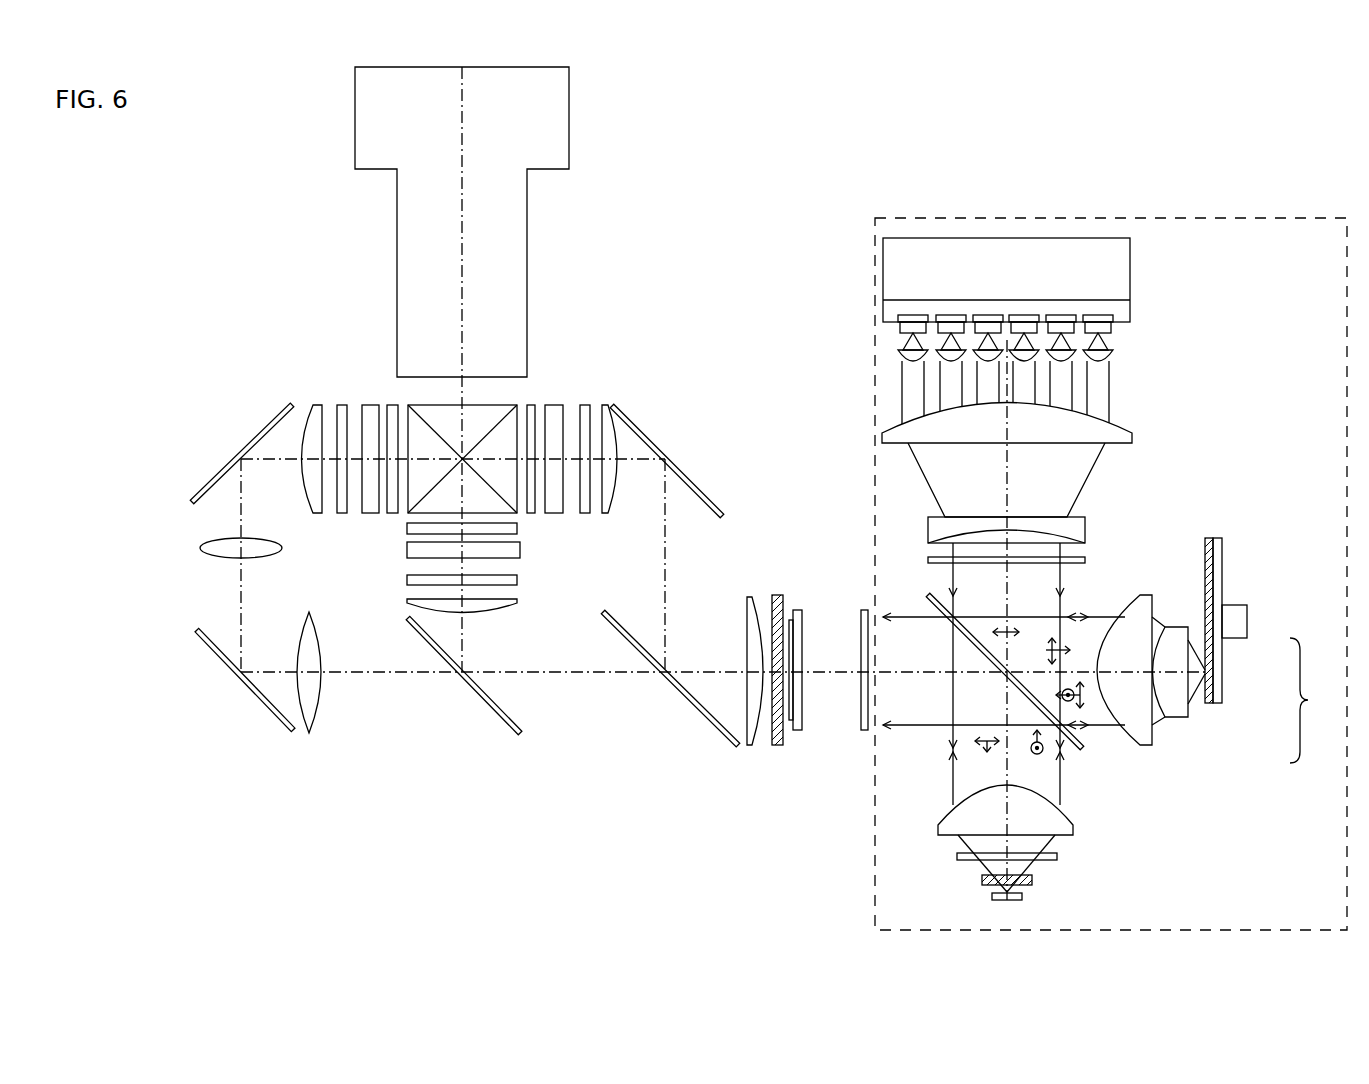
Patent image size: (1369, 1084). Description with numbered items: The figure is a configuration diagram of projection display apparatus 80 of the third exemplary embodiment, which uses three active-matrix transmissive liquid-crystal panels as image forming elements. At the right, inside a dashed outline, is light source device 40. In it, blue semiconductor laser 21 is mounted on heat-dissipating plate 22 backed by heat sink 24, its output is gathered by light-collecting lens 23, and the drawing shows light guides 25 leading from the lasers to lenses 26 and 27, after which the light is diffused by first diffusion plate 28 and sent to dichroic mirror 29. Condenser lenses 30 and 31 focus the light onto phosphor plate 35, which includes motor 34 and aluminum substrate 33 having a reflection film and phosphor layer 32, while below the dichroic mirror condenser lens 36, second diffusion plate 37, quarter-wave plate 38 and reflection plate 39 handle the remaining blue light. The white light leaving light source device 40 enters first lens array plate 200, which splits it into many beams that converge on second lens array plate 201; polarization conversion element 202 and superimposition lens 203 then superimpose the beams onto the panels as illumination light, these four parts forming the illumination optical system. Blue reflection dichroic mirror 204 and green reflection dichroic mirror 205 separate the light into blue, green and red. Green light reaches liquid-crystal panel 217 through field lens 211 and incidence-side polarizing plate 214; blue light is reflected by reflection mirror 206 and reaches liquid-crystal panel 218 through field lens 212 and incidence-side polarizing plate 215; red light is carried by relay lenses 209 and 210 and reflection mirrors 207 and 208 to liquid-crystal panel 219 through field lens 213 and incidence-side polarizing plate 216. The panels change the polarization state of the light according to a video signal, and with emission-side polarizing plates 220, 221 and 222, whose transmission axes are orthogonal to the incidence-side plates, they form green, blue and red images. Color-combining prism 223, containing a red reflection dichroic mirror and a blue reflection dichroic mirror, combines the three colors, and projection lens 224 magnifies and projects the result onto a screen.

The projection lens 224 is at (395, 202).
The emission-side polarizing plate 222 is at (393, 405).
The liquid-crystal panel 219 is at (365, 405).
The incidence-side polarizing plate 216 is at (338, 405).
The field lens 213 is at (305, 405).
The reflection mirror 208 is at (230, 462).
The color-combining prism 223 is at (505, 403).
The emission-side polarizing plate 221 is at (530, 515).
The liquid-crystal panel 218 is at (553, 405).
The incidence-side polarizing plate 215 is at (590, 405).
The field lens 212 is at (607, 520).
The reflection mirror 206 is at (642, 434).
The emission-side polarizing plate 220 is at (407, 530).
The liquid-crystal panel 217 is at (407, 548).
The incidence-side polarizing plate 214 is at (517, 580).
The field lens 211 is at (505, 608).
The relay lens 210 is at (233, 560).
The reflection mirror 207 is at (222, 660).
The relay lens 209 is at (318, 722).
The green reflection dichroic mirror 205 is at (477, 700).
The blue reflection dichroic mirror 204 is at (685, 700).
The superimposition lens 203 is at (743, 745).
The polarization conversion element 202 is at (777, 748).
The second lens array plate 201 is at (798, 735).
The first lens array plate 200 is at (861, 720).
The projection display apparatus 80 is at (877, 146).
The light source device 40 is at (1240, 218).
The heat sink 24 is at (1130, 268).
The heat-dissipating plate 22 is at (1130, 310).
The blue semiconductor laser 21 is at (1113, 333).
The light-collecting lens 23 is at (1113, 365).
The light guide rod 25 is at (900, 387).
The lens 26 is at (885, 440).
The lens 27 is at (926, 518).
The first diffusion plate 28 is at (926, 558).
The dichroic mirror 29 is at (930, 597).
The condenser lens 30 is at (1140, 597).
The condenser lens 31 is at (1180, 627).
The phosphor layer 32 is at (1207, 705).
The aluminum substrate 33 is at (1218, 672).
The motor 34 is at (1237, 640).
The phosphor plate 35 is at (1317, 700).
The condenser lens 36 is at (940, 828).
The second diffusion plate 37 is at (958, 857).
The quarter-wave plate 38 is at (1035, 878).
The reflection plate 39 is at (1022, 897).